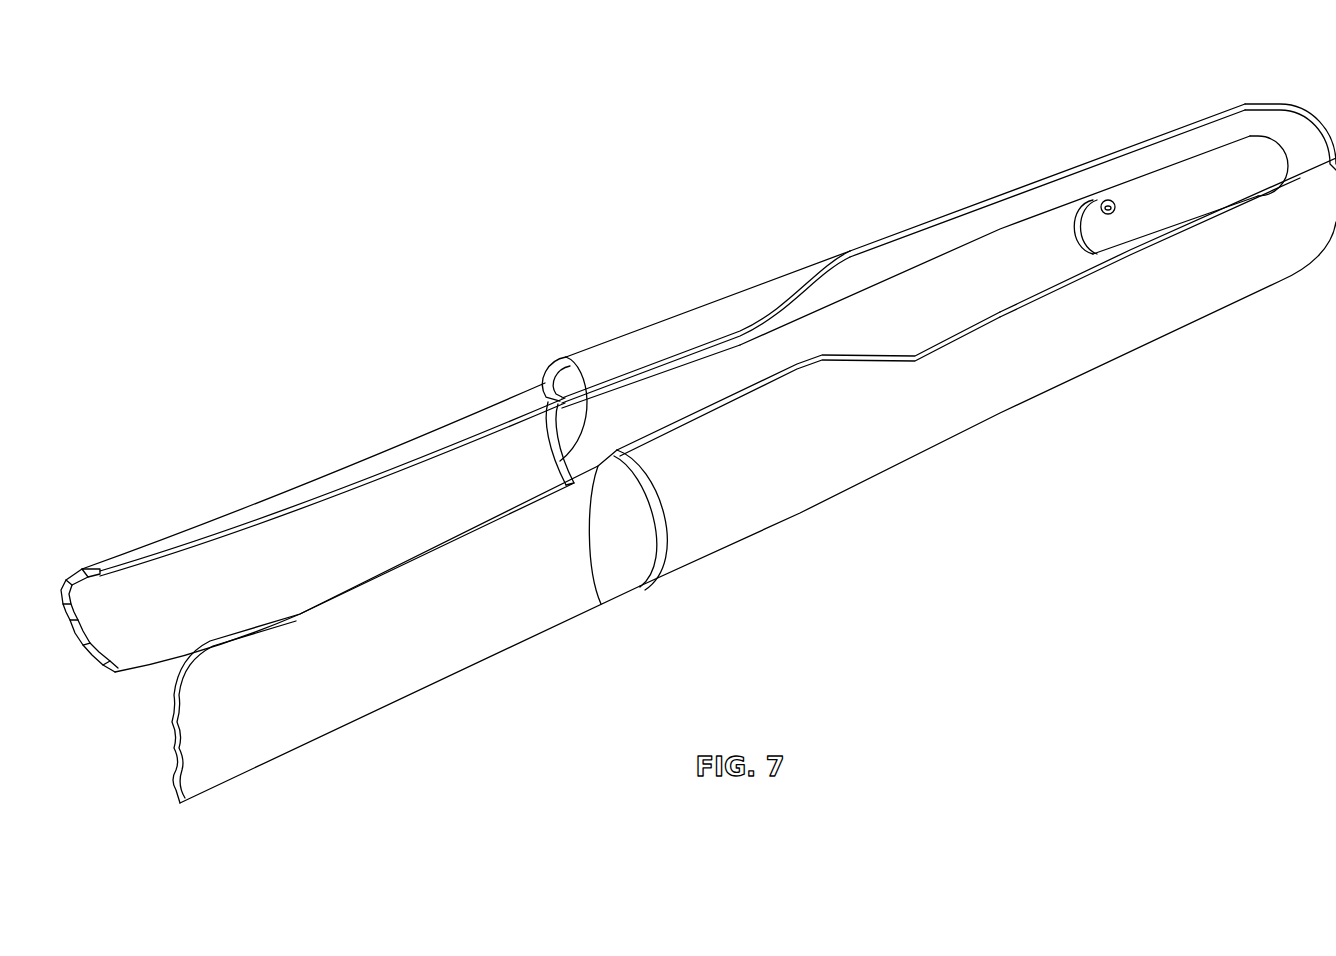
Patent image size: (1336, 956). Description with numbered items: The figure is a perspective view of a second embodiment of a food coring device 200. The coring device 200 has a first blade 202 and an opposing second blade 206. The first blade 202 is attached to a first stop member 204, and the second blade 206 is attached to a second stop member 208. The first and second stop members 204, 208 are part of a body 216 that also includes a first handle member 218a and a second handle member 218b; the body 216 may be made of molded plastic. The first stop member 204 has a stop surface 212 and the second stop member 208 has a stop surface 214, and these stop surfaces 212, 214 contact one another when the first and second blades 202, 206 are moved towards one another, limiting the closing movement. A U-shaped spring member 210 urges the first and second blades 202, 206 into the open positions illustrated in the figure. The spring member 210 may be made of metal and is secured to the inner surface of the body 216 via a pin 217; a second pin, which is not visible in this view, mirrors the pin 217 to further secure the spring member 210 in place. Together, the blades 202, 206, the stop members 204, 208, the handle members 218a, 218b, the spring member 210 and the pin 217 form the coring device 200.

The food coring device 200 is at (176, 196).
The first blade 202 is at (277, 488).
The first stop member 204 is at (641, 347).
The second blade 206 is at (380, 712).
The second stop member 208 is at (708, 492).
The U-shaped spring member 210 is at (1219, 173).
The stop surface 212 is at (553, 454).
The stop surface 214 is at (594, 573).
The body 216 is at (992, 160).
The pin 217 is at (1105, 200).
The first handle member 218a is at (933, 222).
The second handle member 218b is at (1133, 322).